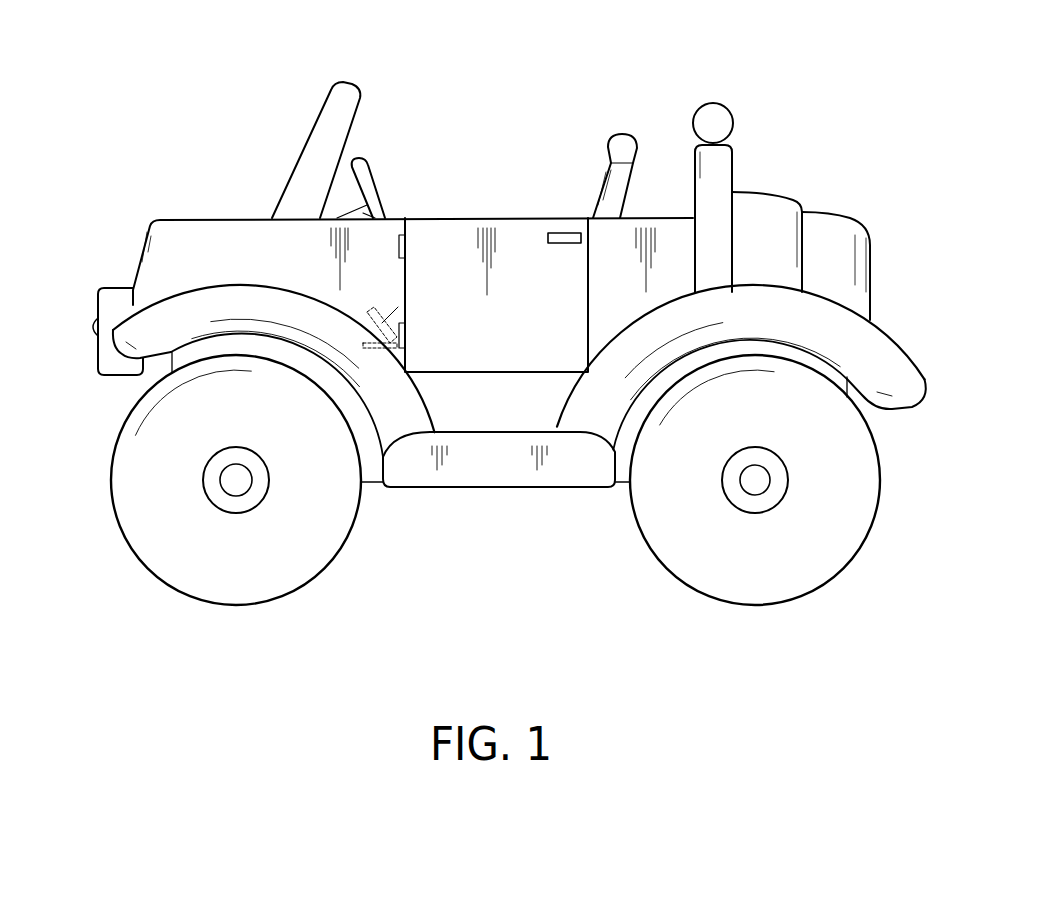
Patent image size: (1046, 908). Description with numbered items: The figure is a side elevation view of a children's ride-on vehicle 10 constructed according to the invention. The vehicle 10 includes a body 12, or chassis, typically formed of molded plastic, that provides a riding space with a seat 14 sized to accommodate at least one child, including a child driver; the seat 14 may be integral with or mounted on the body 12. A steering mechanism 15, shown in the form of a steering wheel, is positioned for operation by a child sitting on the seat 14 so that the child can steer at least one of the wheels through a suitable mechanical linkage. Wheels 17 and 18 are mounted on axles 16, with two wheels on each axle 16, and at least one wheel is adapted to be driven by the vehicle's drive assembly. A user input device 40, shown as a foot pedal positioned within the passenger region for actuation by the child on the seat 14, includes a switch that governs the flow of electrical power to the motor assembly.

The children's ride-on vehicle 10 is at (818, 78).
The body 12 is at (85, 249).
The seat 14 is at (619, 120).
The steering mechanism 15 is at (390, 185).
The axles 16 is at (242, 480).
The wheel 17 is at (322, 582).
The wheel 18 is at (840, 583).
The user input device 40 is at (405, 298).